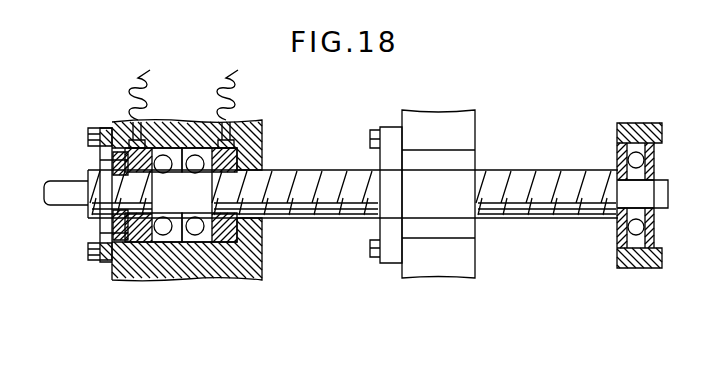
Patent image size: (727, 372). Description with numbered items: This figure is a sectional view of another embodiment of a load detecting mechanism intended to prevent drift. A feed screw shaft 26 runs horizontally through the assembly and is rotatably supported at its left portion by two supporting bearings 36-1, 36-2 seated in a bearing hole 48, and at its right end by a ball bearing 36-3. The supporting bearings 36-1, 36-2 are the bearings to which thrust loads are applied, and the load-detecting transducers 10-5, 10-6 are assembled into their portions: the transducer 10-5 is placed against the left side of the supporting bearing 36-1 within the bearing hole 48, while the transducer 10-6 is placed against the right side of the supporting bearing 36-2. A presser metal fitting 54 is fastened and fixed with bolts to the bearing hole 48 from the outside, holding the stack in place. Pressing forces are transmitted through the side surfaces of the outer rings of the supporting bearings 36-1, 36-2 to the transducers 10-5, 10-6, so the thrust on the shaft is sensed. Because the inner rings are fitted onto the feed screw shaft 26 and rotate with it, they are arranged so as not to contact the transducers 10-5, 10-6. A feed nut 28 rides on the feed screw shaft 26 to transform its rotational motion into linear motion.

The feed screw shaft 26 is at (542, 210).
The feed nut 28 is at (432, 233).
The transducer 10-5 is at (122, 280).
The transducer 10-6 is at (255, 280).
The supporting bearing 36-1 is at (160, 280).
The supporting bearing 36-2 is at (203, 275).
The ball bearing 36-3 is at (638, 244).
The bearing hole 48 is at (176, 148).
The presser metal fitting 54 is at (88, 143).